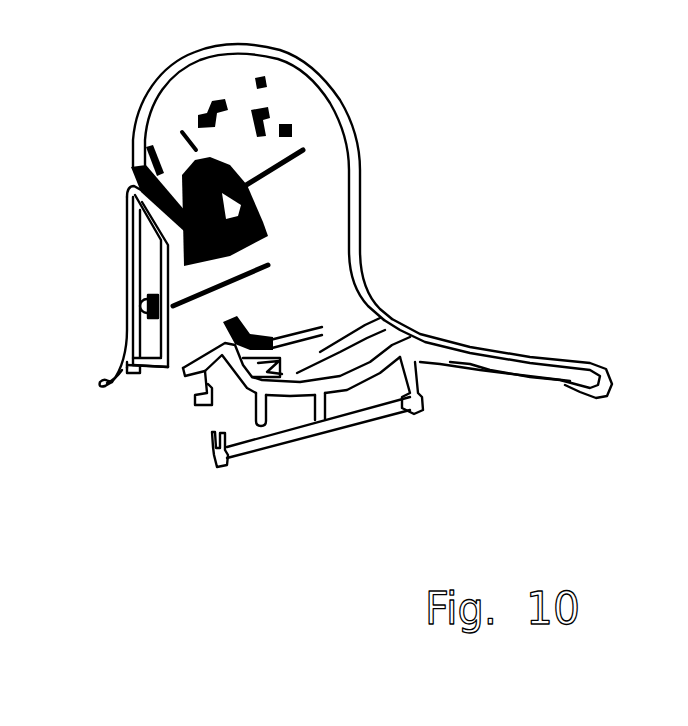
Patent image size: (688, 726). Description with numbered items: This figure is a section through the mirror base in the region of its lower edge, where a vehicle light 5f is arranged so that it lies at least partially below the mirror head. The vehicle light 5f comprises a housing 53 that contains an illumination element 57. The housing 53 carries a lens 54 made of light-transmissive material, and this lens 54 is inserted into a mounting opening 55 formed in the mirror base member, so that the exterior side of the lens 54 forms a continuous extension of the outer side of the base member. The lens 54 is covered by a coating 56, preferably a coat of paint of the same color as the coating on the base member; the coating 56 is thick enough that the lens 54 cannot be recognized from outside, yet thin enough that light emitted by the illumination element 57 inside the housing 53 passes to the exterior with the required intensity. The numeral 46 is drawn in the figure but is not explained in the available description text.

The vehicle light 5f is at (250, 279).
The housing 46 is at (105, 386).
The housing 53 is at (148, 366).
The lens 54 is at (127, 312).
The mounting opening 55 is at (124, 377).
The coating 56 is at (127, 258).
The illumination element 57 is at (170, 297).